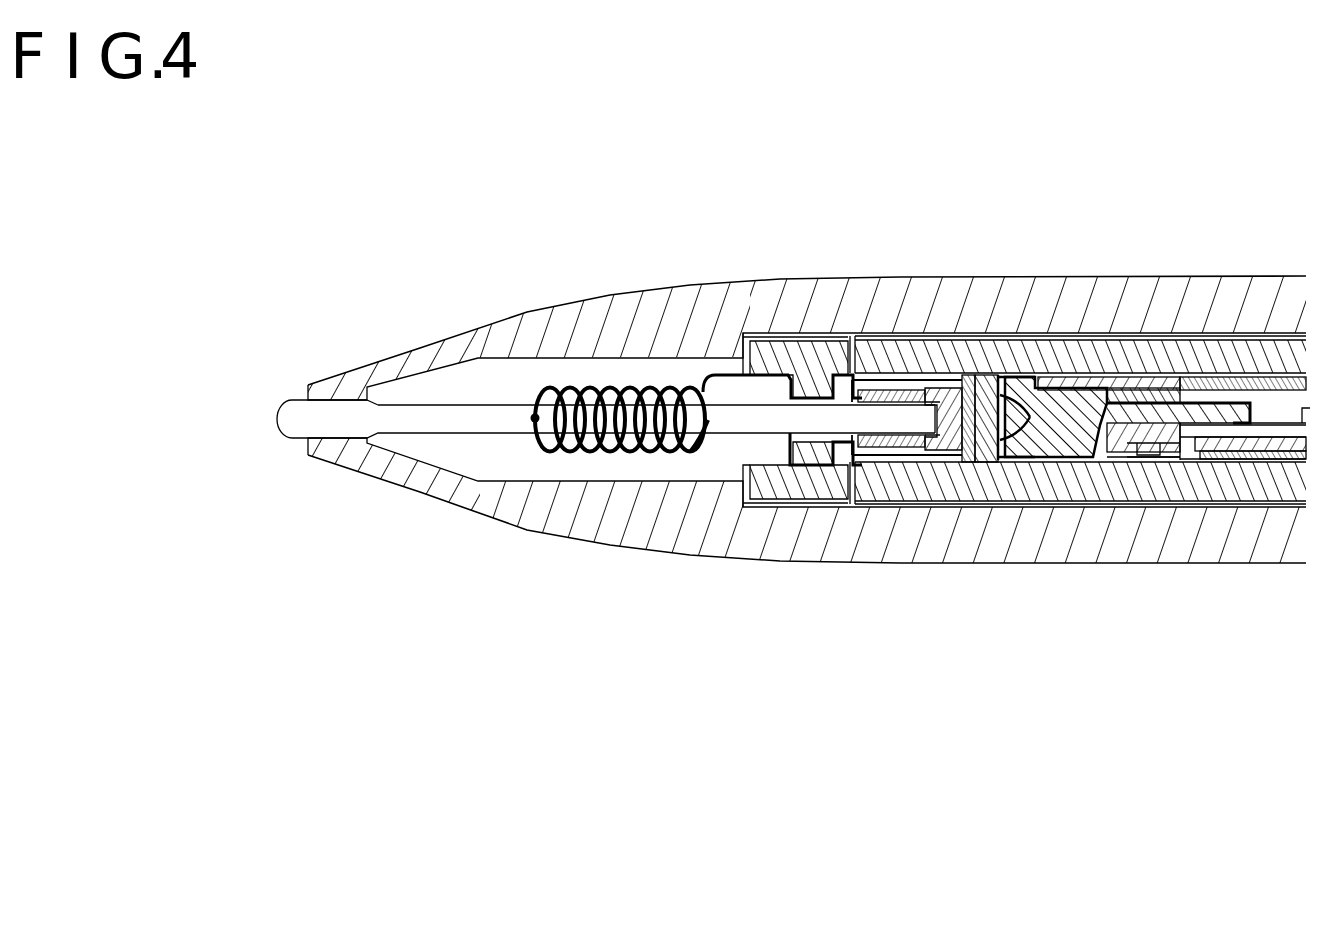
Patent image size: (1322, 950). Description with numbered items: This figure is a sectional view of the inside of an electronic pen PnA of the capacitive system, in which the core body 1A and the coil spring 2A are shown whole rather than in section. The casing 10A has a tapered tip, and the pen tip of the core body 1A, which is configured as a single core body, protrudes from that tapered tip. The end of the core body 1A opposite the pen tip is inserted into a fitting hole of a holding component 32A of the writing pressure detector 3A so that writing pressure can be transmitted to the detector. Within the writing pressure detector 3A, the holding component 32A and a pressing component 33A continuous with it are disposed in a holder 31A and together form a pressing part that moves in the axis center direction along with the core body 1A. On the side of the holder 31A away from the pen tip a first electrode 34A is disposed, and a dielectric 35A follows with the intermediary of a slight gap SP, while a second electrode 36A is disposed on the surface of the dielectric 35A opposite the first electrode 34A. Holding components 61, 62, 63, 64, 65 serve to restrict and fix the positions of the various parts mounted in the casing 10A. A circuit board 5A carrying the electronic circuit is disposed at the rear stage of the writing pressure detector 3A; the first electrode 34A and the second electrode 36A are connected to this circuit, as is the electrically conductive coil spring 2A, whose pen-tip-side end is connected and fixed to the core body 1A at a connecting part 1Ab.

The electronic pen PnA is at (845, 172).
The casing 10A is at (963, 270).
The core body 1A is at (445, 430).
The connecting part 1Ab is at (535, 418).
The coil spring 2A is at (645, 452).
The holding component 61 is at (776, 345).
The writing pressure detector 3A is at (1077, 645).
The holder 31A is at (840, 465).
The holding component 32A is at (880, 450).
The pressing component 33A is at (905, 455).
The first electrode 34A is at (945, 455).
The gap SP is at (970, 462).
The dielectric 35A is at (990, 458).
The second electrode 36A is at (1010, 458).
The holding component 62 is at (1020, 400).
The holding component 63 is at (1068, 384).
The holding component 64 is at (1160, 372).
The holding component 65 is at (1258, 372).
The circuit board 5A is at (1270, 440).